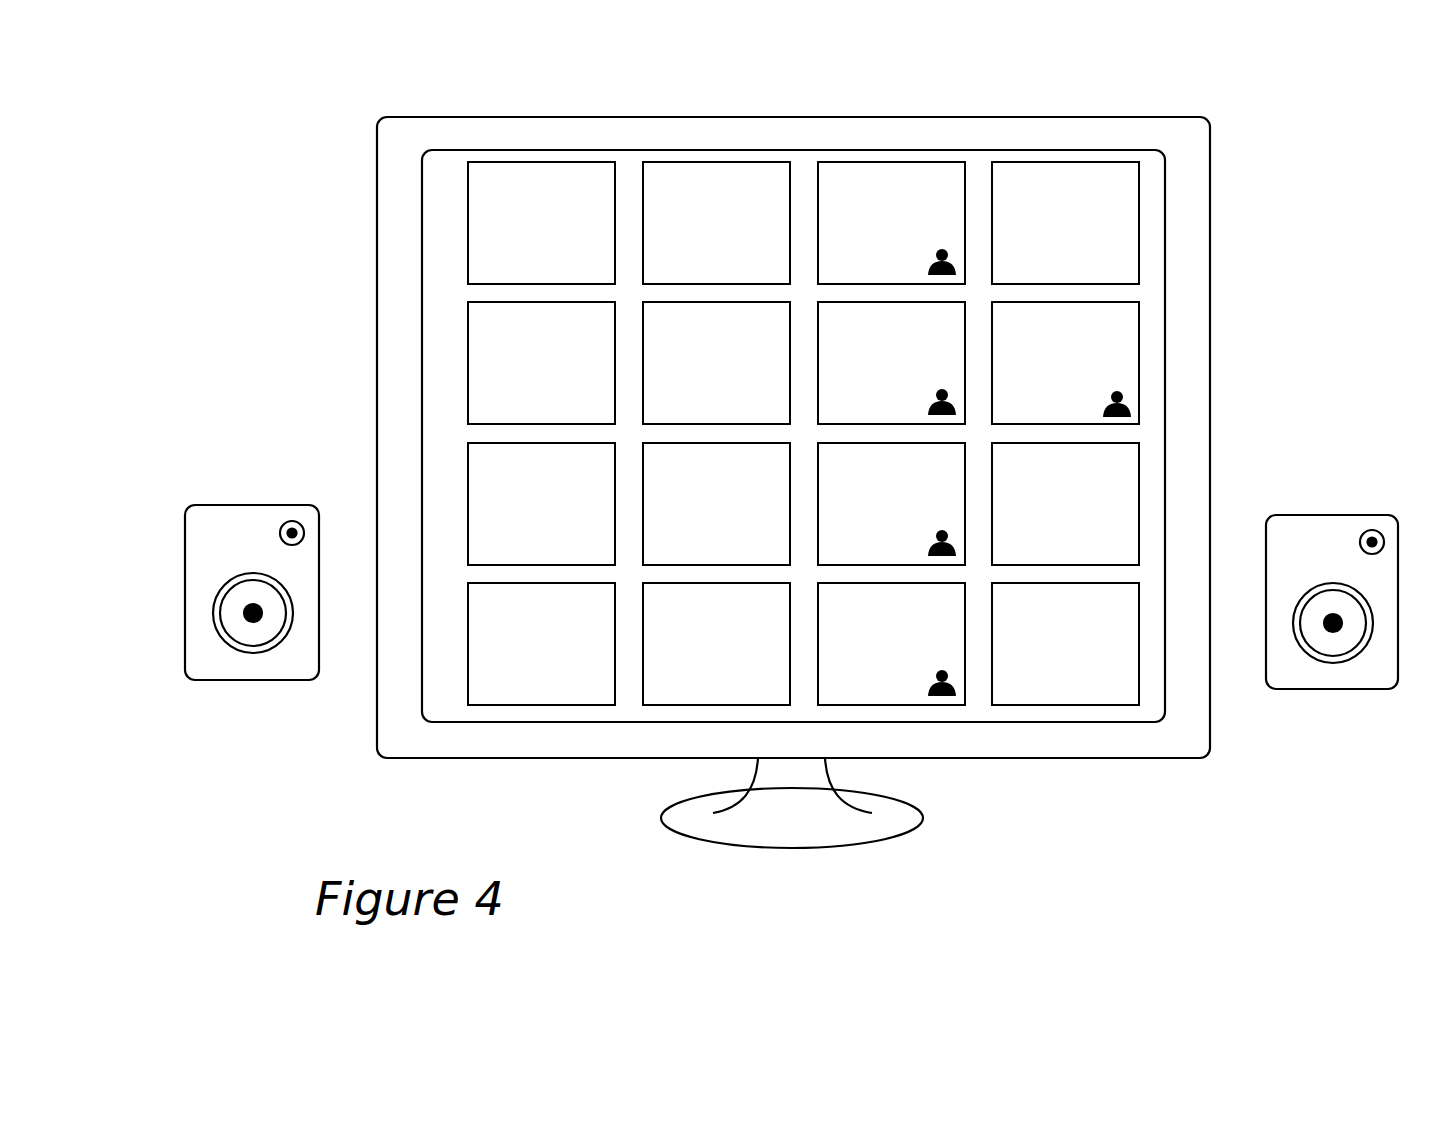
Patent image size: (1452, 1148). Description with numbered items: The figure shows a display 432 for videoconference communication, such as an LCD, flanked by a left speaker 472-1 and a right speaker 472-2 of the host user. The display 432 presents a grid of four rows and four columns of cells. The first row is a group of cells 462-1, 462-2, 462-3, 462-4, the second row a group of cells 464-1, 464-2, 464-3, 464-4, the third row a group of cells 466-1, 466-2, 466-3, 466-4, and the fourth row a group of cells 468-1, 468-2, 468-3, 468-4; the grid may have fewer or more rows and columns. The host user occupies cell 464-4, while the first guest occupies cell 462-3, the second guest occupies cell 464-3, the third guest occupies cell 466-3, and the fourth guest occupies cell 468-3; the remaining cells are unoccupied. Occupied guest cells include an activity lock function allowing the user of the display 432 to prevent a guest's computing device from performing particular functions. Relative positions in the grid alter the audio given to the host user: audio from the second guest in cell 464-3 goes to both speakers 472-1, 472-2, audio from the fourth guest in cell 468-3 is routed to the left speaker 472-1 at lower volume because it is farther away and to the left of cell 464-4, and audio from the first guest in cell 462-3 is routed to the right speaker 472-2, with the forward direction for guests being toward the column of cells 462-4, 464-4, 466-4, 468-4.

The display 432 is at (1103, 117).
The cell 462-1 is at (514, 190).
The cell 462-2 is at (689, 190).
The cell 462-3 is at (864, 190).
The cell 462-4 is at (1038, 190).
The cell 464-1 is at (514, 330).
The cell 464-2 is at (689, 330).
The cell 464-3 is at (864, 330).
The cell 464-4 is at (1038, 330).
The cell 466-1 is at (514, 471).
The cell 466-2 is at (689, 471).
The cell 466-3 is at (864, 471).
The cell 466-4 is at (1038, 471).
The cell 468-1 is at (514, 611).
The cell 468-2 is at (689, 611).
The cell 468-3 is at (864, 611).
The cell 468-4 is at (1038, 611).
The left speaker 472-1 is at (248, 505).
The right speaker 472-2 is at (1318, 515).